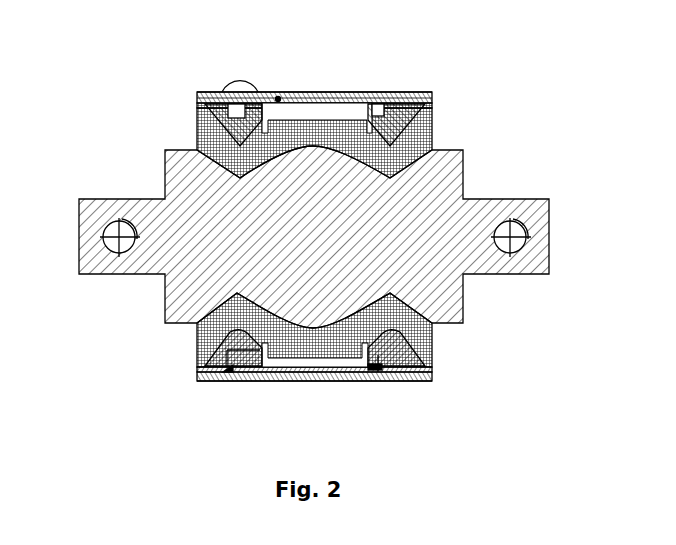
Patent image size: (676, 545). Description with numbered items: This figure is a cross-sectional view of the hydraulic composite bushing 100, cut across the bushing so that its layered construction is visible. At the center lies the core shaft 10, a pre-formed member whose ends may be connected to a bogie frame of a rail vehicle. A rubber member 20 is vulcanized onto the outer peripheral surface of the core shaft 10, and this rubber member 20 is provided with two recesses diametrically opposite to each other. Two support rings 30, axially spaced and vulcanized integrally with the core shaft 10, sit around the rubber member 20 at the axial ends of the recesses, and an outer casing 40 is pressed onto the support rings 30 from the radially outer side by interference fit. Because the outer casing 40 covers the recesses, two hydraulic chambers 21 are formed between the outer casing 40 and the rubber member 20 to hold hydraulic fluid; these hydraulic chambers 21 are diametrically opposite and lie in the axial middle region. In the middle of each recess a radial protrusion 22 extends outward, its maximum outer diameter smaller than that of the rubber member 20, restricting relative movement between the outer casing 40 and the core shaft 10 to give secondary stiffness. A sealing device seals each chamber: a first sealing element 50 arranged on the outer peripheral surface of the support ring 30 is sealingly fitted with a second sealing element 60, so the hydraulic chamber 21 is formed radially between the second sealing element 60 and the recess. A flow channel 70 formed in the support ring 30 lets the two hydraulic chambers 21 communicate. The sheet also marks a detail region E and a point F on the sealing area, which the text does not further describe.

The hydraulic composite bushing 100 is at (105, 53).
The core shaft 10 is at (441, 191).
The rubber member 20 is at (433, 140).
The hydraulic chamber 21 is at (378, 370).
The radial protrusion 22 is at (311, 374).
The support ring 30 is at (433, 99).
The outer casing 40 is at (422, 98).
The first sealing element 50 is at (381, 100).
The second sealing element 60 is at (336, 98).
The flow channel 70 is at (197, 355).
The detail region E is at (240, 80).
The point F is at (279, 97).